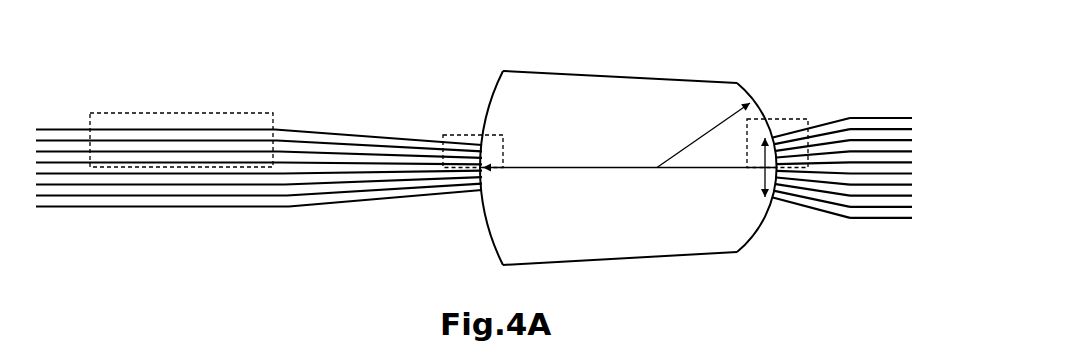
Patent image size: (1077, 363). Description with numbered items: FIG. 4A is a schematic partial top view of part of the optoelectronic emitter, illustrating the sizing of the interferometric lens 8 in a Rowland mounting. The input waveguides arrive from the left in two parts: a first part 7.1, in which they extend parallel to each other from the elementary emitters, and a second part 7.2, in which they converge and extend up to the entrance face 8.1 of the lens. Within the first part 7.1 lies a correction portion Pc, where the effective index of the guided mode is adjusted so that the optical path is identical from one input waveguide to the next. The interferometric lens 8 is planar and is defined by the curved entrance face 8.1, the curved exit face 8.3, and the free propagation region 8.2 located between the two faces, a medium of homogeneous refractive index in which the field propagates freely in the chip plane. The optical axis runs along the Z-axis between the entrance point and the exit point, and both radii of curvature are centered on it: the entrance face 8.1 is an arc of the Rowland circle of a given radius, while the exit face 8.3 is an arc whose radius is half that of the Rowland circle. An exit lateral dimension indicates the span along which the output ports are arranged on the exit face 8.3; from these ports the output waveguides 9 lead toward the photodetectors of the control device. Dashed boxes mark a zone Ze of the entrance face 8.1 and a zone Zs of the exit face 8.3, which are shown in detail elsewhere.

The first part of the input waveguides 7.1 is at (173, 208).
The second part of the input waveguides 7.2 is at (322, 206).
The interferometric lens 8 is at (621, 163).
The entrance face 8.1 is at (482, 213).
The free propagation region 8.2 is at (627, 225).
The exit face 8.3 is at (765, 223).
The output waveguides 9 is at (893, 221).
The correction portion Pc is at (182, 112).
The zone of the entrance face Ze is at (473, 131).
The zone of the exit face Zs is at (778, 118).